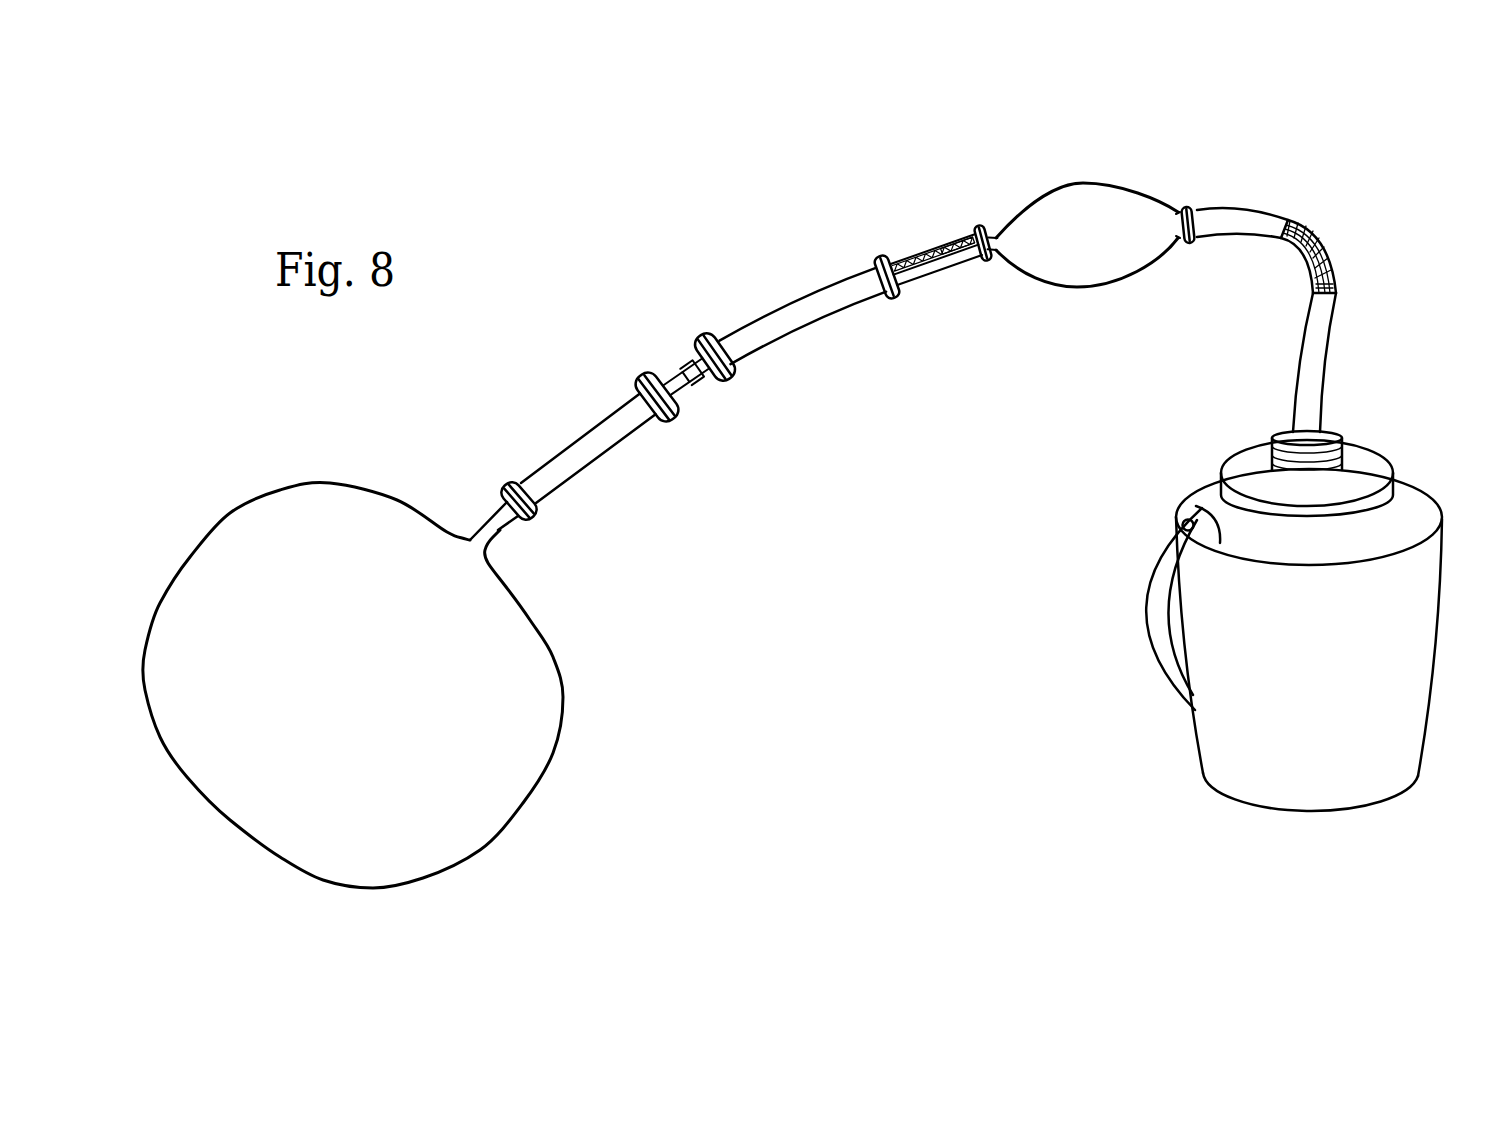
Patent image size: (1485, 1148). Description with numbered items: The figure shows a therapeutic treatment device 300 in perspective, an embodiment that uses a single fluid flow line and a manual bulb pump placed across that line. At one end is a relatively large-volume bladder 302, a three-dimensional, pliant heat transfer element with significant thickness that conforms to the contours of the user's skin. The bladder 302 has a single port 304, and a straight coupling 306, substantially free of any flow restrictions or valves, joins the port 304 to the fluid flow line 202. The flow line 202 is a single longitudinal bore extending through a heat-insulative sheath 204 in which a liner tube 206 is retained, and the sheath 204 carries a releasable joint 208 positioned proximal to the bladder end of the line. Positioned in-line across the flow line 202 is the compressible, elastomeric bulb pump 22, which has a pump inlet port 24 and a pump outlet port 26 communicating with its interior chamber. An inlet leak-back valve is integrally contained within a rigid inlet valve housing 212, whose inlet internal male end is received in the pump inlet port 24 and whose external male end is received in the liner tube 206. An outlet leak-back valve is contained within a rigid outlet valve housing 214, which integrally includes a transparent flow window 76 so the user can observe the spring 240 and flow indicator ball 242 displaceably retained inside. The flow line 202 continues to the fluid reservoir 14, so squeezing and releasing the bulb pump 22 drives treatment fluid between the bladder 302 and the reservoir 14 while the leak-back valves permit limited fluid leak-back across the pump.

The fluid reservoir 14 is at (1430, 660).
The bulb pump 22 is at (1095, 182).
The pump inlet port 24 is at (1180, 240).
The pump outlet port 26 is at (995, 257).
The transparent flow window 76 is at (927, 277).
The fluid flow line 202 is at (1320, 237).
The heat-insulative sheath 204 is at (1325, 340).
The liner tube 206 is at (1338, 282).
The releasable joint 208 is at (703, 330).
The inlet valve housing 212 is at (1193, 207).
The outlet valve housing 214 is at (983, 230).
The spring 240 is at (927, 245).
The flow indicator ball 242 is at (967, 237).
The therapeutic treatment device 300 is at (930, 545).
The bladder 302 is at (305, 841).
The port 304 is at (503, 540).
The straight coupling 306 is at (512, 482).